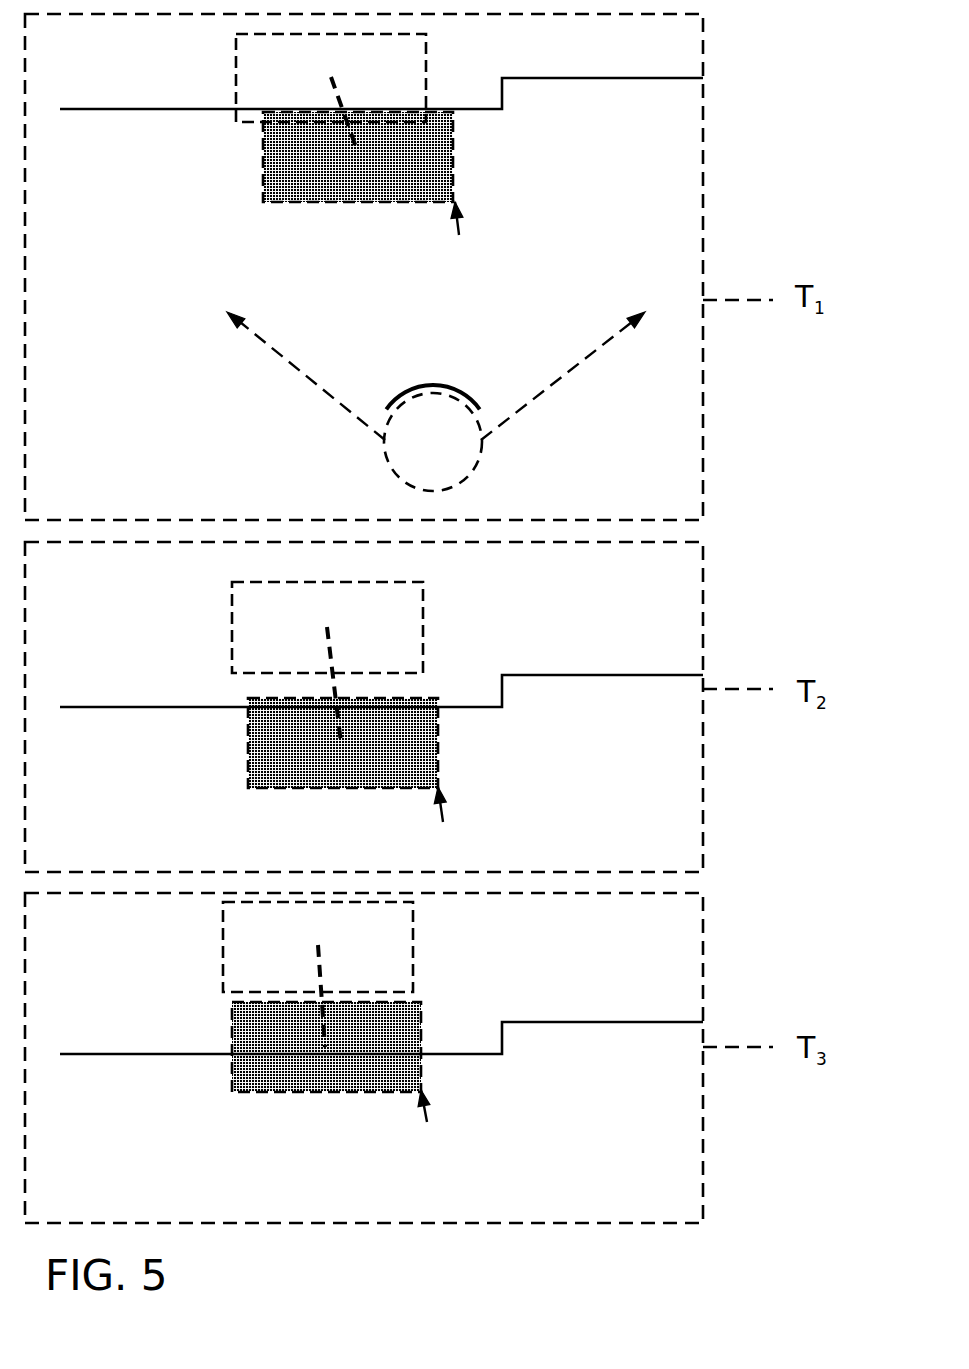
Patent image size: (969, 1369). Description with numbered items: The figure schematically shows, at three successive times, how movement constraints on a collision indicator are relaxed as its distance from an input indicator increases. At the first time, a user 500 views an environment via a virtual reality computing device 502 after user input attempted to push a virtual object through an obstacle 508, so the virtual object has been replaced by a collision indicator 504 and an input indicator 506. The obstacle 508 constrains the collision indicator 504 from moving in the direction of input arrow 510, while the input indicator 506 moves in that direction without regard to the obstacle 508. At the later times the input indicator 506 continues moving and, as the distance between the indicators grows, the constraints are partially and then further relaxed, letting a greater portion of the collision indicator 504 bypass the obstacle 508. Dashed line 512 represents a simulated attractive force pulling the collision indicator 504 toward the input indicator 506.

The user 500 is at (453, 453).
The virtual reality computing device 502 is at (412, 388).
The collision indicator 504 is at (330, 205).
The input indicator 506 is at (233, 37).
The obstacle 508 is at (147, 110).
The input arrow 510 is at (458, 220).
The dashed line 512 is at (328, 86).